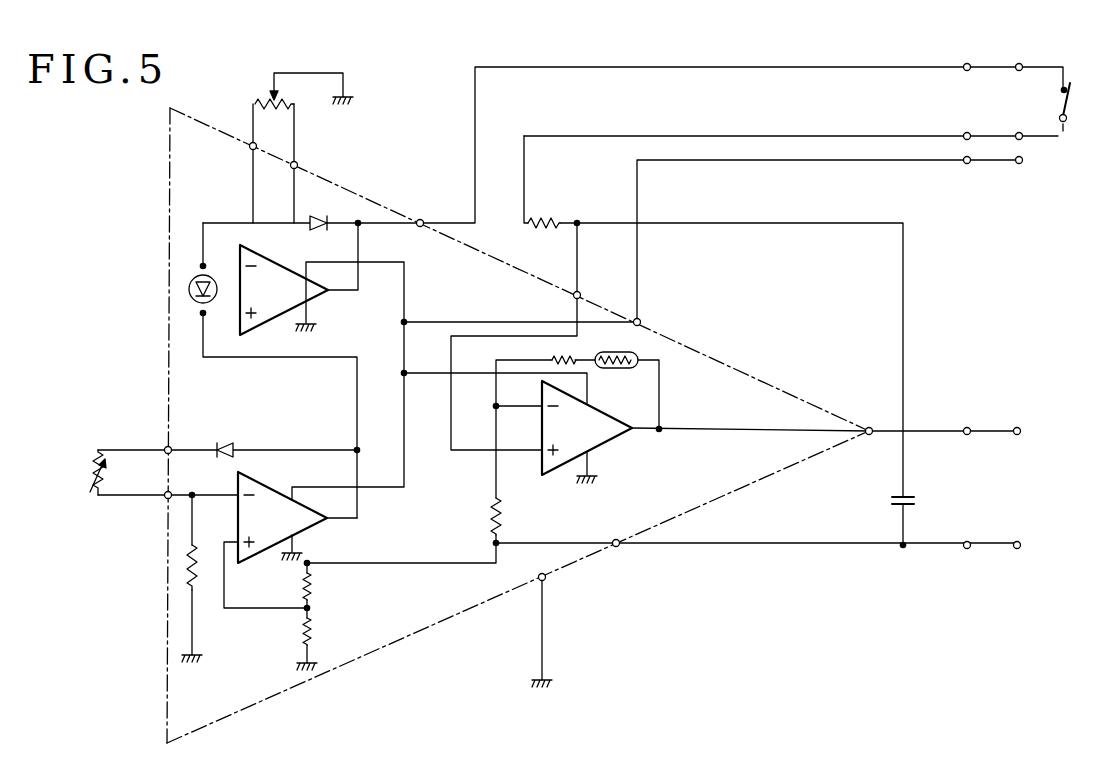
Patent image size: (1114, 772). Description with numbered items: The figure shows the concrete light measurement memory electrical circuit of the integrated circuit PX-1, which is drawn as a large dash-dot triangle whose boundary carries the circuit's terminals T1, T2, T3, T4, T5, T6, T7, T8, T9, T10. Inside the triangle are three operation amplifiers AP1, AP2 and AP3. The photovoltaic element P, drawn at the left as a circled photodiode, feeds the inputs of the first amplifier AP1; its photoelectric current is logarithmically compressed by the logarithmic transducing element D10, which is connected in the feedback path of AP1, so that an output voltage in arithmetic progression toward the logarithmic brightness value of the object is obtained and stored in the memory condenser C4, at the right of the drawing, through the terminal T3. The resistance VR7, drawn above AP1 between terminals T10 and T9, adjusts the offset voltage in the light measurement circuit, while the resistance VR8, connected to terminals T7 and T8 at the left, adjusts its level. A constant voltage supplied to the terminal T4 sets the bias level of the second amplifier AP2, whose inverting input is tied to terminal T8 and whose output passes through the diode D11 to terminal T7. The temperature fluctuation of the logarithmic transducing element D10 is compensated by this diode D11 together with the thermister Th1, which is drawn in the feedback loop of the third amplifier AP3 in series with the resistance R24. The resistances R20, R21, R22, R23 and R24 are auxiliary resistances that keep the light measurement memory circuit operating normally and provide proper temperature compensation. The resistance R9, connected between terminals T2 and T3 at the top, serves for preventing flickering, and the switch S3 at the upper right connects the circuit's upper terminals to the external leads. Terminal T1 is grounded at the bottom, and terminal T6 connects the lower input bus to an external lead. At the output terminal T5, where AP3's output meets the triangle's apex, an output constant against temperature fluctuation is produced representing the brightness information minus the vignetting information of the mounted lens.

The IC PX-1 is at (267, 700).
The switch S3 is at (1078, 107).
The resistance for adjusting the offset voltage VR7 is at (276, 118).
The resistance for adjusting the level VR8 is at (121, 472).
The terminal T1 is at (541, 564).
The terminal T2 is at (426, 211).
The terminal T3 is at (590, 285).
The terminal T4 is at (621, 559).
The output terminal T5 is at (881, 419).
The terminal T6 is at (651, 313).
The terminal T7 is at (181, 438).
The terminal T8 is at (181, 483).
The terminal T9 is at (288, 181).
The terminal T10 is at (246, 157).
The logarithmic transducing element D10 is at (325, 241).
The diode D11 is at (235, 438).
The photovoltaic element P is at (197, 289).
The operation amplifier AP1 is at (284, 290).
The operation amplifier AP2 is at (282, 517).
The operation amplifier AP3 is at (587, 428).
The resistance for preventing the flickering R9 is at (544, 213).
The auxiliary resistance R20 is at (210, 567).
The auxiliary resistance R21 is at (325, 587).
The auxiliary resistance R22 is at (325, 634).
The auxiliary resistance R23 is at (514, 516).
The auxiliary resistance R24 is at (573, 355).
The thermister Th1 is at (618, 377).
The memory condenser C4 is at (917, 501).